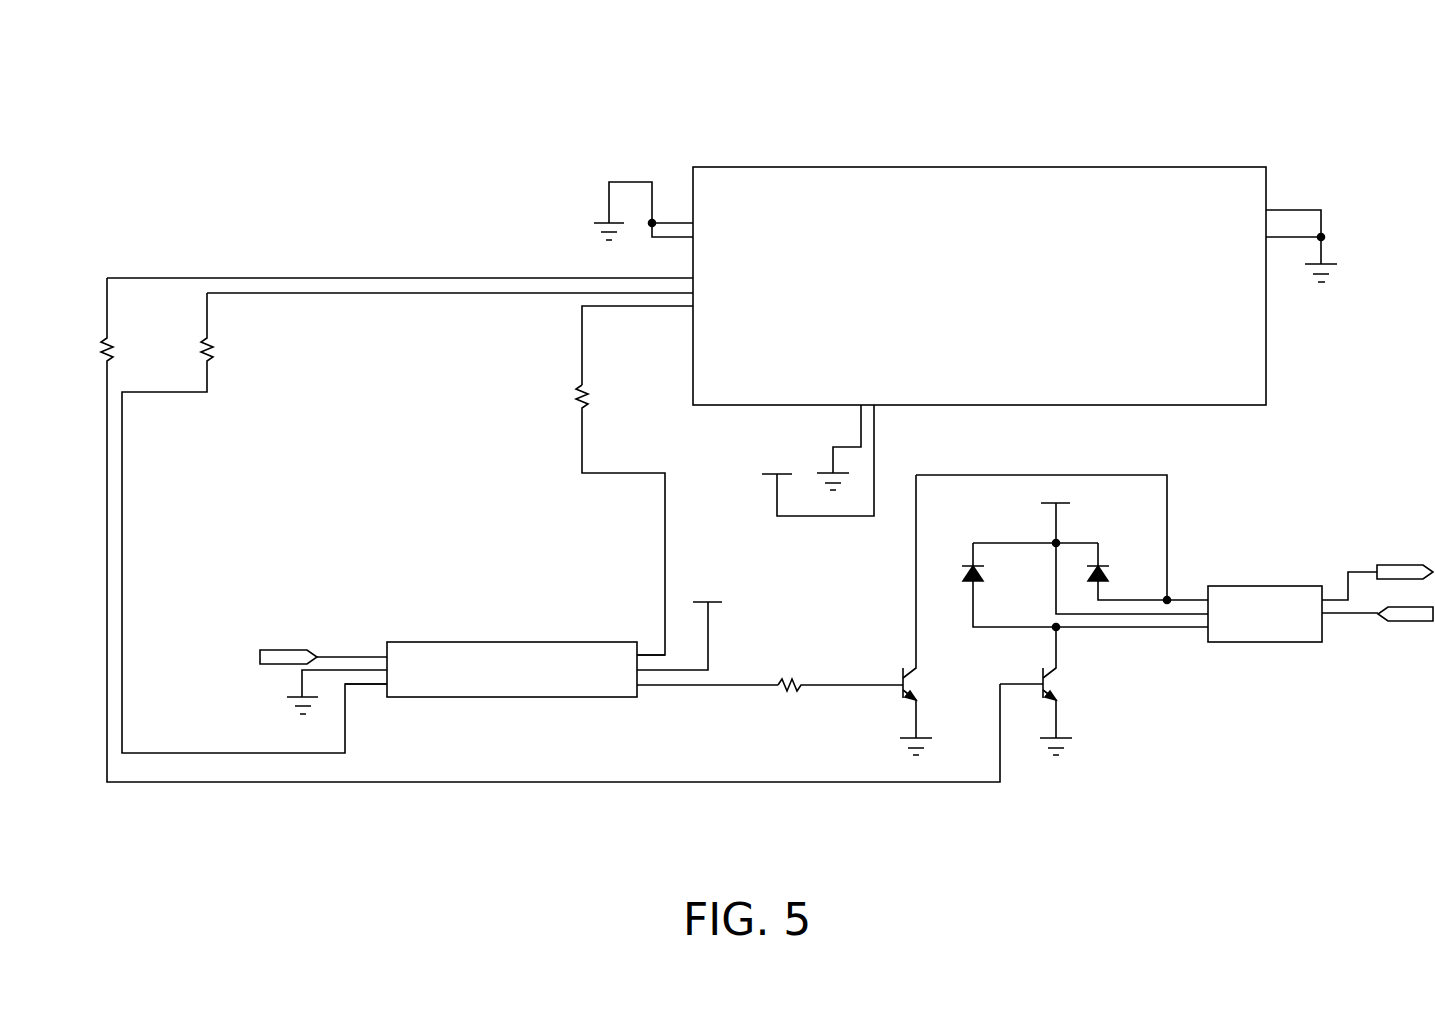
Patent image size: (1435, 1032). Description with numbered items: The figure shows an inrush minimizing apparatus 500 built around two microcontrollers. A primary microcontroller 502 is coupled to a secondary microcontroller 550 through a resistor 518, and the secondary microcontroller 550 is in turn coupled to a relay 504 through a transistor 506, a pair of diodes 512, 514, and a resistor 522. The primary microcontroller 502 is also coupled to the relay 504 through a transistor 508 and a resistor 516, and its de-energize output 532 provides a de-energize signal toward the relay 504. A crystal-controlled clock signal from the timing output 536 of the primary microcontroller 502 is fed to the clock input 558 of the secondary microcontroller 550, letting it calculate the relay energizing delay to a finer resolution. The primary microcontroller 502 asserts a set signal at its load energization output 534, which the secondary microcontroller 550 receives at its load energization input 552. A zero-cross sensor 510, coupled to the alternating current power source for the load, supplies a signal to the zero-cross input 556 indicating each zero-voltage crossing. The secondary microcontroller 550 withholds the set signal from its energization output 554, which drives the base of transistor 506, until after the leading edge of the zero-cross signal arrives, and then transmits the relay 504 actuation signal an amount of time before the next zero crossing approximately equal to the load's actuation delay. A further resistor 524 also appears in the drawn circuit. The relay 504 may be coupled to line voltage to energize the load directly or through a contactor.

The inrush minimizing apparatus 500 is at (1253, 70).
The primary microcontroller 502 is at (965, 259).
The relay 504 is at (1260, 642).
The transistor 506 is at (903, 674).
The transistor 508 is at (1043, 674).
The zero-cross sensor 510 is at (273, 650).
The diode 512 is at (973, 564).
The diode 514 is at (1099, 566).
The resistor 516 is at (108, 340).
The resistor 518 is at (207, 360).
The resistor 522 is at (790, 692).
The resistor 524 is at (580, 402).
The de-energize output 532 is at (693, 278).
The load energization output 534 is at (693, 293).
The timing output 536 is at (693, 308).
The secondary microcontroller 550 is at (536, 681).
The load energization input 552 is at (387, 690).
The energization output 554 is at (640, 690).
The zero-cross input 556 is at (387, 655).
The clock input 558 is at (640, 655).